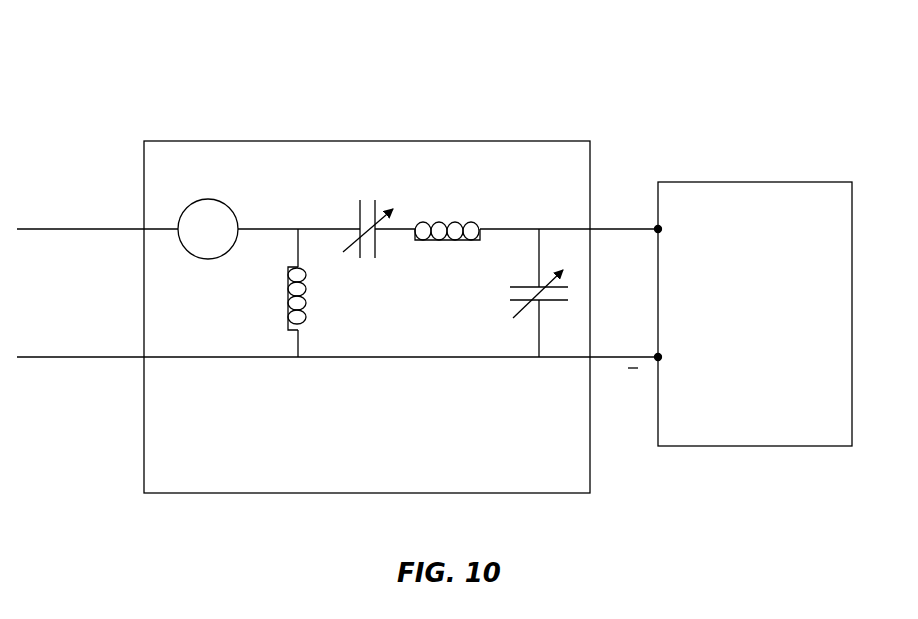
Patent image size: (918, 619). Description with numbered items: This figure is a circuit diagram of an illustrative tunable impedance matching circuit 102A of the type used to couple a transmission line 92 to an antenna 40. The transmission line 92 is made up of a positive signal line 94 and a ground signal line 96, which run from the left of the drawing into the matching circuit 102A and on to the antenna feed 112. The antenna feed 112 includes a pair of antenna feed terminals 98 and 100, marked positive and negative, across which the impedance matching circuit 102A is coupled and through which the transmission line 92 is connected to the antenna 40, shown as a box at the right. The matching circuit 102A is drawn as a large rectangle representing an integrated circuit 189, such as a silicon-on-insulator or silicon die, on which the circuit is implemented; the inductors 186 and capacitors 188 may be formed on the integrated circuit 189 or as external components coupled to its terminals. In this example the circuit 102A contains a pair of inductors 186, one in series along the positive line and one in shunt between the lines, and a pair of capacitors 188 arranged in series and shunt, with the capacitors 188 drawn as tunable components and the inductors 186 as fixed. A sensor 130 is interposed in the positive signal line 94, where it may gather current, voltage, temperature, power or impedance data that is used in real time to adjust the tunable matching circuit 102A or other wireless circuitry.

The impedance matching circuit 102A is at (401, 263).
The integrated circuit 189 is at (435, 140).
The sensor 130 is at (226, 199).
The capacitor 188 is at (392, 201).
The inductor 186 is at (474, 208).
The antenna feed 112 is at (641, 240).
The antenna feed terminal 98 is at (661, 229).
The antenna feed terminal 100 is at (661, 357).
The antenna 40 is at (803, 446).
The transmission line 92 is at (157, 312).
The positive signal line 94 is at (65, 227).
The ground signal line 96 is at (65, 355).